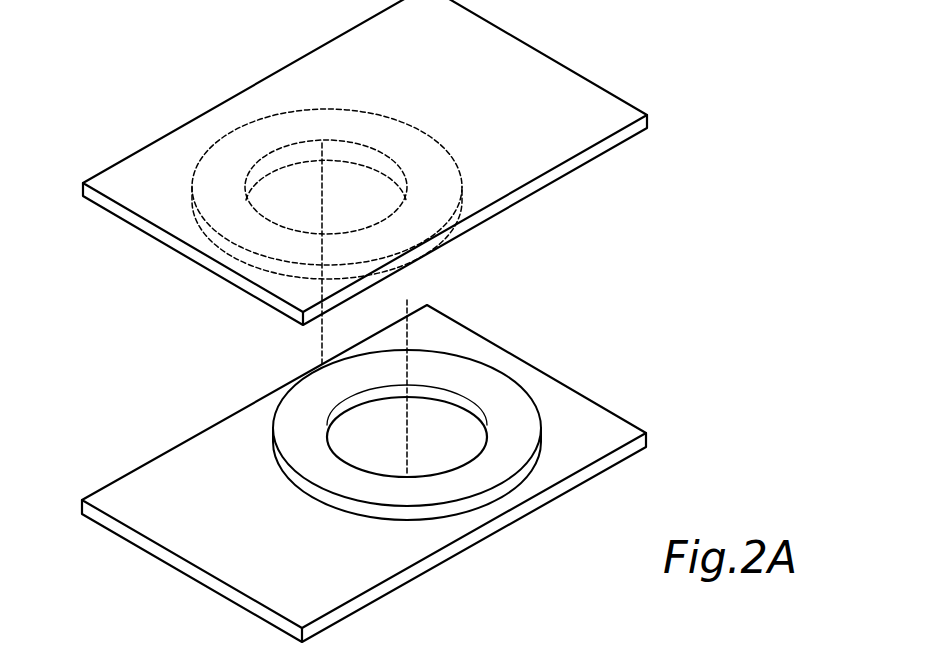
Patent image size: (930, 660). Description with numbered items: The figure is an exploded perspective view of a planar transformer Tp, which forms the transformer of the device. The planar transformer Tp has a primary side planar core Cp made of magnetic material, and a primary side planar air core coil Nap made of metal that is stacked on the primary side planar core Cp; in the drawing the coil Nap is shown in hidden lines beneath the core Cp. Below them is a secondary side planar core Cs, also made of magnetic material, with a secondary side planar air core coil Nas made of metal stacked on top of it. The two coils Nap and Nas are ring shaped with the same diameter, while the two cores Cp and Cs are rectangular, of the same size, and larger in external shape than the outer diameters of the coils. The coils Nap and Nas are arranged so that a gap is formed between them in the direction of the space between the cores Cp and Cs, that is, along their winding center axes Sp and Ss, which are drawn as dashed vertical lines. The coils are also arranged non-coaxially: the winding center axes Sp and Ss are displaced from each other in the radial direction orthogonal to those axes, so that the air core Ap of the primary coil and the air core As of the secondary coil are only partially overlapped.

The planar transformer Tp is at (408, 321).
The primary side planar core Cp is at (377, 182).
The primary side planar air core coil Nap is at (276, 155).
The air core Ap is at (292, 145).
The winding center axis Sp is at (318, 352).
The secondary side planar core Cs is at (382, 471).
The secondary side planar air core coil Nas is at (449, 451).
The air core As is at (452, 466).
The winding center axis Ss is at (408, 372).